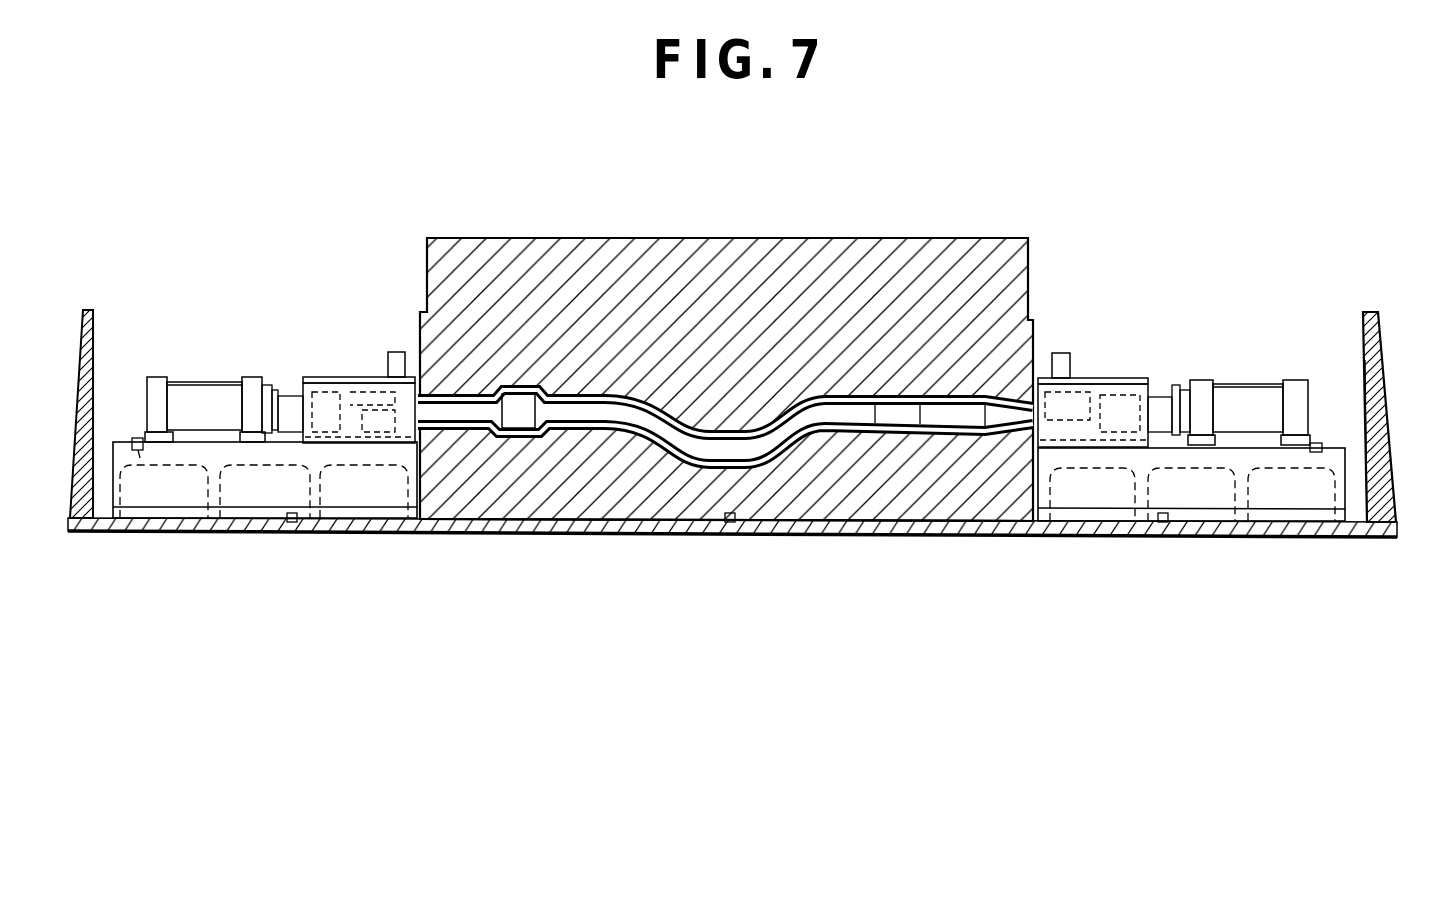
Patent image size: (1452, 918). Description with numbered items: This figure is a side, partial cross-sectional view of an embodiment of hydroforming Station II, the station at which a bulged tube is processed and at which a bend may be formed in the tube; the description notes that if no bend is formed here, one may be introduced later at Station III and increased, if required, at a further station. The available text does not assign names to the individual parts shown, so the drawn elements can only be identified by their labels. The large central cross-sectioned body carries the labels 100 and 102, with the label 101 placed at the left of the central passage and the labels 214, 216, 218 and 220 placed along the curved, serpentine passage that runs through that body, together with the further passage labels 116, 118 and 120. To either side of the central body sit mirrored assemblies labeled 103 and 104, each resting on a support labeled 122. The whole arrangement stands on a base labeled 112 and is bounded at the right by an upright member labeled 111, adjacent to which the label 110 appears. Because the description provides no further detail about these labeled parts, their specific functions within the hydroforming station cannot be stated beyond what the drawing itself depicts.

The mold block 100 is at (975, 283).
The channel upper wall 101 is at (472, 395).
The lower mold block 102 is at (920, 487).
The mounting tab 103 is at (392, 342).
The gearbox 104 is at (334, 353).
The frame 110 is at (1350, 418).
The side wall 111 is at (1381, 338).
The base plate 112 is at (225, 527).
The channel lower wall 116 is at (613, 430).
The channel bend 118 is at (732, 468).
The channel wall 120 is at (808, 440).
The motor stand 122 is at (133, 440).
The channel curved portion 214 is at (727, 432).
The channel bottom 216 is at (692, 468).
The channel right wall 218 is at (1003, 437).
The channel left wall 220 is at (458, 429).